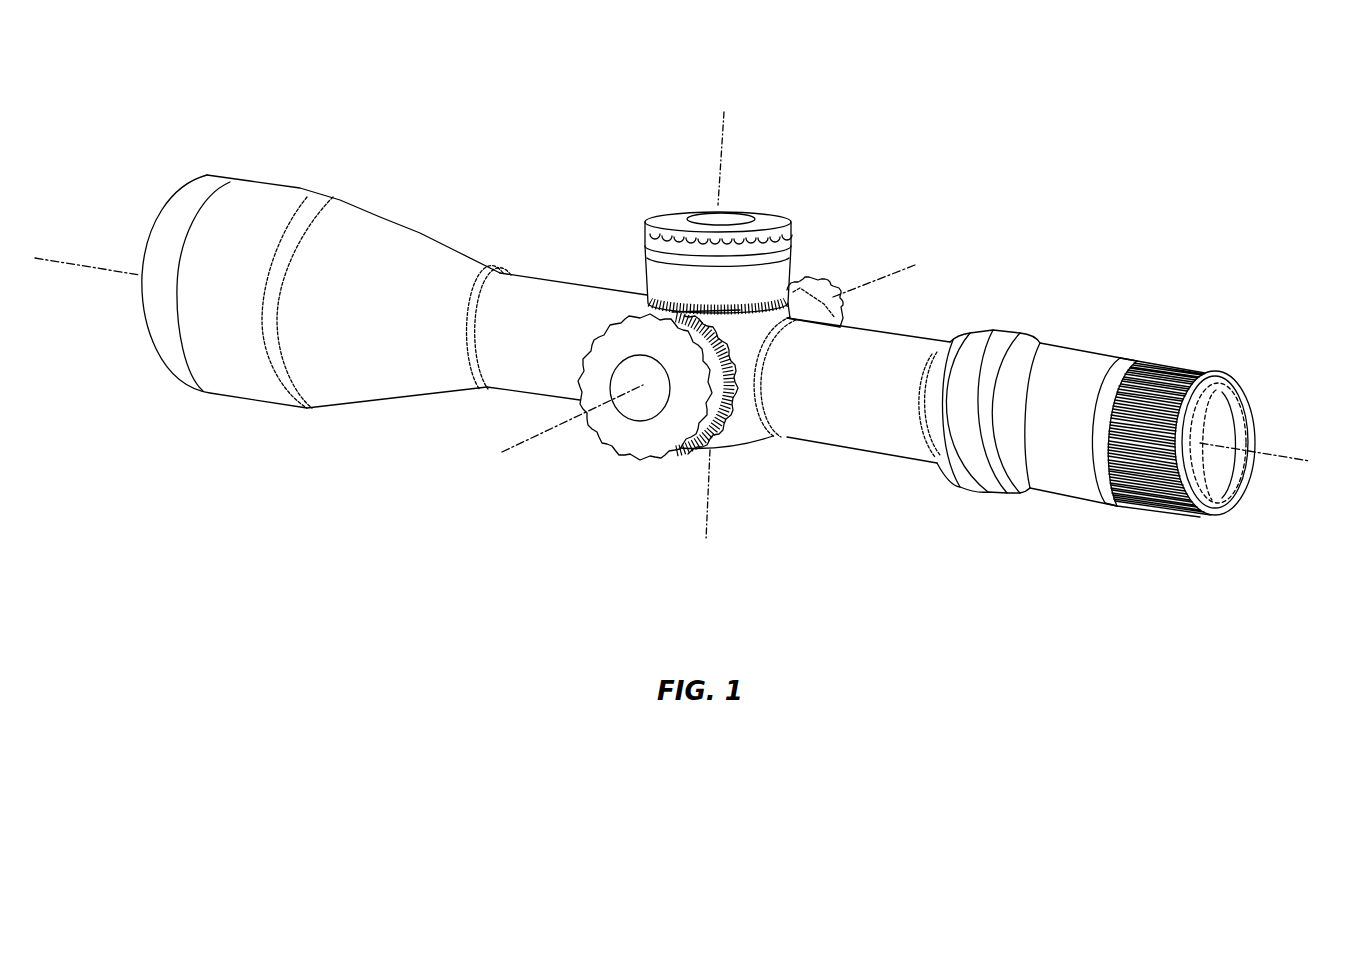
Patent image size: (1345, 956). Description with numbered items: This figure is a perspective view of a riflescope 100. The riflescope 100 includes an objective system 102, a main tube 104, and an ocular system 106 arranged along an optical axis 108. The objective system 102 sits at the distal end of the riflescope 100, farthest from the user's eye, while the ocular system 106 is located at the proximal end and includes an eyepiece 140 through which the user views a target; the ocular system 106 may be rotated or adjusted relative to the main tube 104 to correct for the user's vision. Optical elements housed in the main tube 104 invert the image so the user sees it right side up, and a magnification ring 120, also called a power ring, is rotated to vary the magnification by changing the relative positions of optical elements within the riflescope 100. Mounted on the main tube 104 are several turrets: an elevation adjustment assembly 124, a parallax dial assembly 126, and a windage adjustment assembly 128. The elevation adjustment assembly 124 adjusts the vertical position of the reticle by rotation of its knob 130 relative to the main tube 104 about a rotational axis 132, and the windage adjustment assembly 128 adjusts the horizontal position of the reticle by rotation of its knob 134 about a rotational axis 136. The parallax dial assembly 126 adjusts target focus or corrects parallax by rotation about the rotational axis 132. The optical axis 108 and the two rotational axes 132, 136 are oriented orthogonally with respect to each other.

The riflescope 100 is at (943, 136).
The objective system 102 is at (316, 178).
The main tube 104 is at (545, 397).
The ocular system 106 is at (1138, 326).
The optical axis 108 is at (53, 257).
The magnification ring 120 is at (1013, 327).
The elevation adjustment assembly 124 is at (674, 178).
The parallax dial assembly 126 is at (620, 474).
The windage adjustment assembly 128 is at (820, 262).
The knob 130 is at (654, 210).
The rotational axis 132 is at (724, 153).
The knob 134 is at (843, 318).
The rotational axis 136 is at (530, 440).
The eyepiece 140 is at (1232, 418).